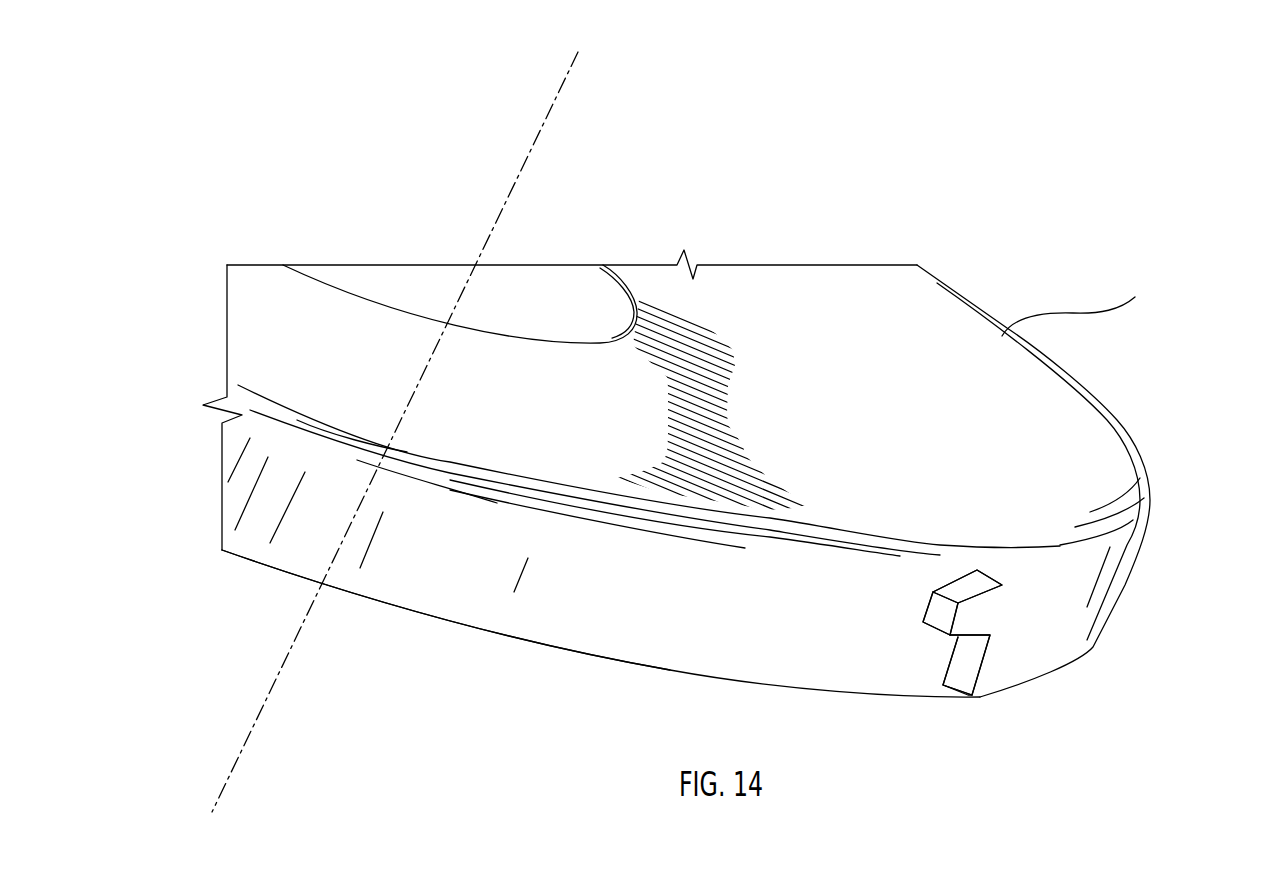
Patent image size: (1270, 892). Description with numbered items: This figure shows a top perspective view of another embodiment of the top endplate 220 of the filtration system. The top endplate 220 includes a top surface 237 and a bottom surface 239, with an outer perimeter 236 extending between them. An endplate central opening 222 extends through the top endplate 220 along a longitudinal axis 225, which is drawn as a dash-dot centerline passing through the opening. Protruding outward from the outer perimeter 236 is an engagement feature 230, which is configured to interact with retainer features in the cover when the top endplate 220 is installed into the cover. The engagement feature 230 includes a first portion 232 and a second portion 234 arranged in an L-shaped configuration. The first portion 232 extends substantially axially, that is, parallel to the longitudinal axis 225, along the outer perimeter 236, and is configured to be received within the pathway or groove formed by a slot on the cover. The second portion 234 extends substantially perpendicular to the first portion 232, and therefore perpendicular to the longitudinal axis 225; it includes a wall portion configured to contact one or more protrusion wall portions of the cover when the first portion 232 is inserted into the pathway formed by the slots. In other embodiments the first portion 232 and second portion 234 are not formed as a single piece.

The top endplate 220 is at (1055, 218).
The endplate central opening 222 is at (598, 297).
The longitudinal axis 225 is at (545, 119).
The engagement feature 230 is at (973, 737).
The first portion 232 is at (978, 697).
The second portion 234 is at (975, 588).
The outer perimeter 236 is at (438, 573).
The top surface 237 is at (1079, 299).
The bottom surface 239 is at (598, 658).